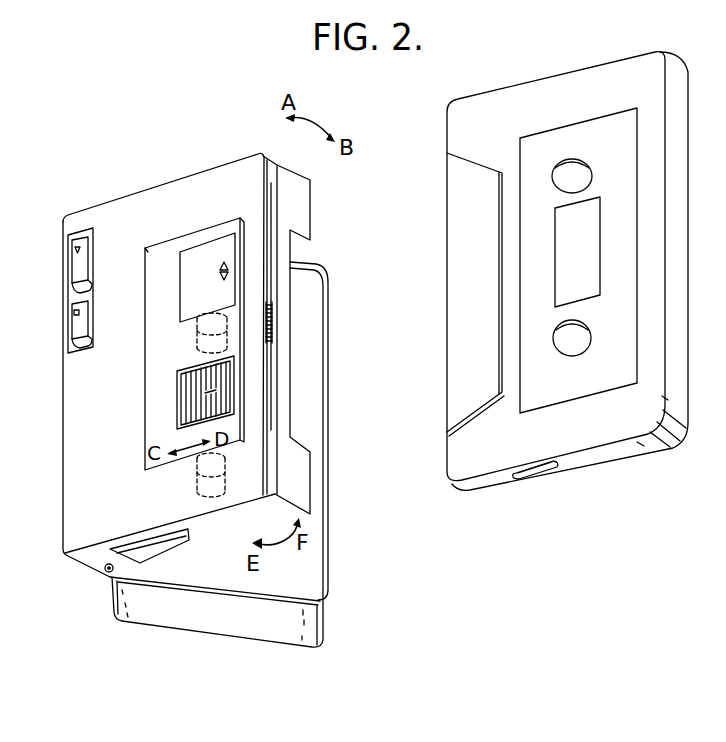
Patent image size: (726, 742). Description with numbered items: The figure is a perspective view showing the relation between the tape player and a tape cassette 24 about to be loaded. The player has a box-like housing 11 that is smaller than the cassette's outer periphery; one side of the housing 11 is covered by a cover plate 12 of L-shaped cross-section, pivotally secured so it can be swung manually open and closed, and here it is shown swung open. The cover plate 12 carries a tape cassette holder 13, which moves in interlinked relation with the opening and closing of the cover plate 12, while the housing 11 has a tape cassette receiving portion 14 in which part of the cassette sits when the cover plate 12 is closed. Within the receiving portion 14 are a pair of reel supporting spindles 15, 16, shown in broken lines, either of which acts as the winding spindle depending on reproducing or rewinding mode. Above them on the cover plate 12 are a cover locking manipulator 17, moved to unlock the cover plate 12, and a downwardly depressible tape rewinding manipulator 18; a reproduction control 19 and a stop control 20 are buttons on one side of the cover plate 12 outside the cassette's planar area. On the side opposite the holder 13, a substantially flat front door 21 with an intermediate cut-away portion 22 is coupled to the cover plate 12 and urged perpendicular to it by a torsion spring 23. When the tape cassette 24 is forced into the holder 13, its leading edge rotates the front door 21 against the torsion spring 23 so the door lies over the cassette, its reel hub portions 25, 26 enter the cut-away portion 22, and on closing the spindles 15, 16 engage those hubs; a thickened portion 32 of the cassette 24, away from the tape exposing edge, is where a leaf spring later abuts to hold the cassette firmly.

The housing 11 is at (287, 647).
The cover plate 12 is at (173, 182).
The tape cassette holder 13 is at (163, 542).
The tape cassette receiving portion 14 is at (232, 578).
The reel supporting spindle 15 is at (199, 491).
The reel supporting spindle 16 is at (197, 341).
The cover locking manipulator 17 is at (187, 408).
The tape rewinding manipulator 18 is at (205, 255).
The reproduction control 19 is at (71, 262).
The stop control 20 is at (72, 327).
The front door 21 is at (310, 468).
The cut-away portion 22 is at (303, 423).
The torsion spring 23 is at (275, 319).
The tape cassette 24 is at (650, 452).
The reel hub portion 25 is at (586, 336).
The reel hub portion 26 is at (588, 174).
The thickened portion 32 is at (477, 406).